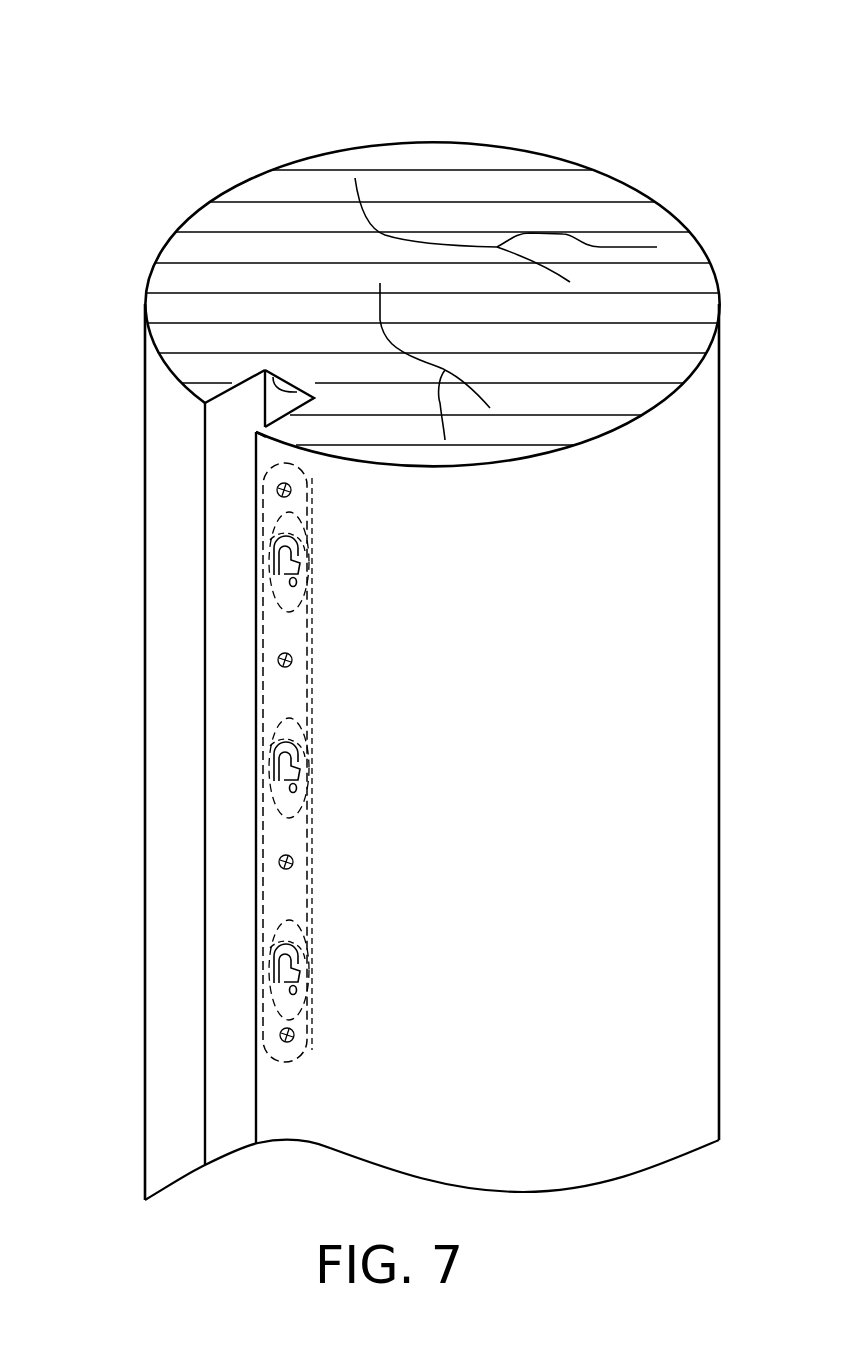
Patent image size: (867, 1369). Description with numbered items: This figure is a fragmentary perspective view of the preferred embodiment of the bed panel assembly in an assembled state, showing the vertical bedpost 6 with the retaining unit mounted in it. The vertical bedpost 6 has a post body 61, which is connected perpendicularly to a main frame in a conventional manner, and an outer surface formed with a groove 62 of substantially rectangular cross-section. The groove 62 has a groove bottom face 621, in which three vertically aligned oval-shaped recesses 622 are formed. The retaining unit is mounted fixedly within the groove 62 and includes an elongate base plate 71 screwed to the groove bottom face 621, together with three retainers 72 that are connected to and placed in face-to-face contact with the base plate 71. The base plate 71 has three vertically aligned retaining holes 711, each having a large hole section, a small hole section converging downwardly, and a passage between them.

The vertical bedpost 6 is at (582, 156).
The post body 61 is at (374, 142).
The groove 62 is at (228, 388).
The groove bottom face 621 is at (273, 377).
The oval-shaped recesses 622 is at (313, 535).
The elongate base plate 71 is at (268, 458).
The retaining holes 711 is at (317, 572).
The retainers 72 is at (270, 538).